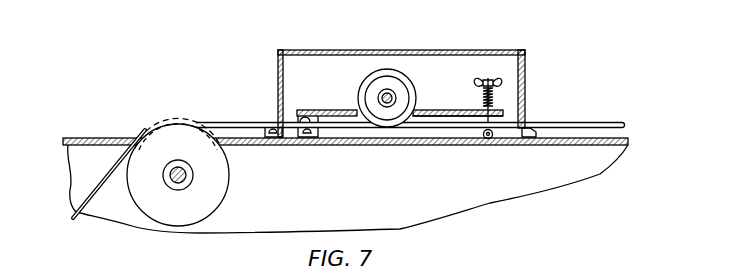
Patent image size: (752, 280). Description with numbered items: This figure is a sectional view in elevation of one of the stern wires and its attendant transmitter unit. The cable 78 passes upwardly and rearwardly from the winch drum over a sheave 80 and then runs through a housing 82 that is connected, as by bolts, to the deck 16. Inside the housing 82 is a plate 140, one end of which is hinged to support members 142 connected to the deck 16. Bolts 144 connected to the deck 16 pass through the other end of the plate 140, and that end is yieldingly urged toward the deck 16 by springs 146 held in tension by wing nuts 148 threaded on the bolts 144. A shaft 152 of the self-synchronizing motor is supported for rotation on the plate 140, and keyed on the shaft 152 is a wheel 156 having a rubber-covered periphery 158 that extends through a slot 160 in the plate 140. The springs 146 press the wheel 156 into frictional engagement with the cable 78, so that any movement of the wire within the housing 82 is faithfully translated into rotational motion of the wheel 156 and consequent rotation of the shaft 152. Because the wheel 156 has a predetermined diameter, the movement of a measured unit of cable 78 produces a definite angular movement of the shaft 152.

The deck 16 is at (110, 138).
The cable 78 is at (77, 212).
The sheave 80 is at (162, 217).
The housing 82 is at (468, 50).
The plate 140 is at (331, 110).
The support members 142 is at (268, 129).
The bolts 144 is at (496, 117).
The springs 146 is at (496, 100).
The wing nuts 148 is at (497, 79).
The shaft 152 is at (393, 95).
The wheel 156 is at (401, 100).
The rubber-covered periphery 158 is at (390, 69).
The slot 160 is at (416, 112).